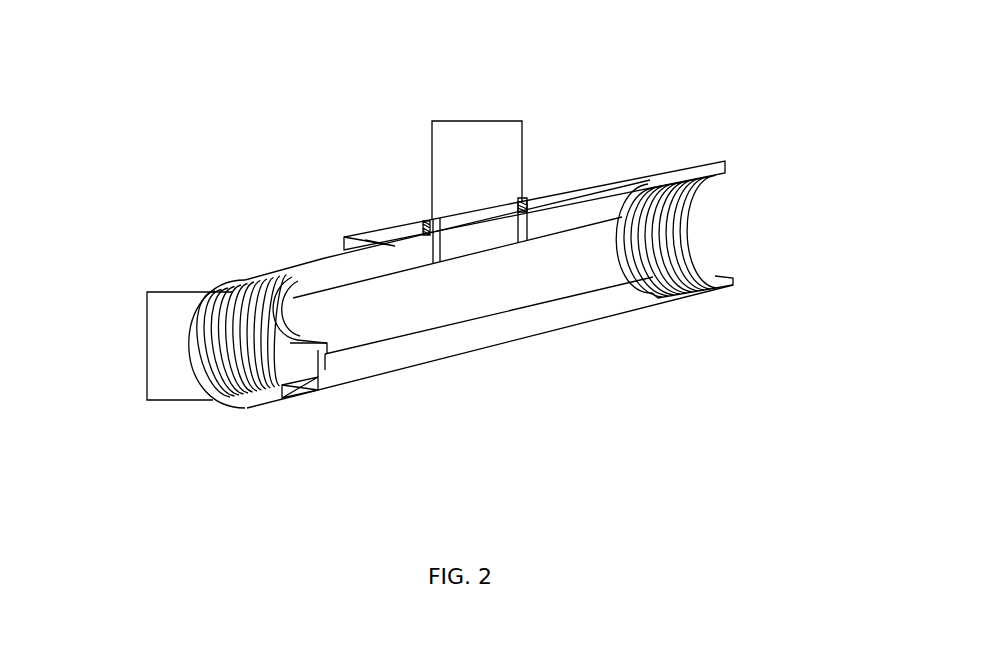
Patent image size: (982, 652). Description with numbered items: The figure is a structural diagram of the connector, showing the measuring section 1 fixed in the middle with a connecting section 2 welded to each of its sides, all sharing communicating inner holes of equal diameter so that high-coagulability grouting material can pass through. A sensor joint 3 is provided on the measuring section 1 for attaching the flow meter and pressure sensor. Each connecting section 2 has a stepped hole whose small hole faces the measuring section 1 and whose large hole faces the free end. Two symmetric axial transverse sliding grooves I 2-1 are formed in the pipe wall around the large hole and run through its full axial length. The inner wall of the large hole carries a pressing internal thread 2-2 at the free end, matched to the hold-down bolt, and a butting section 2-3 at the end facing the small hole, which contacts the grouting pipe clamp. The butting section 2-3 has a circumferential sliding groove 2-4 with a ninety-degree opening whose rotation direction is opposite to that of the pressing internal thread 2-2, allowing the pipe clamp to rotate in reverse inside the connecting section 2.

The measuring section 1 is at (545, 320).
The connecting section 2 is at (458, 275).
The transverse sliding groove I 2-1 is at (147, 345).
The pressing internal thread 2-2 is at (727, 240).
The butting section 2-3 is at (285, 343).
The circumferential sliding groove 2-4 is at (315, 360).
The sensor joint 3 is at (477, 121).